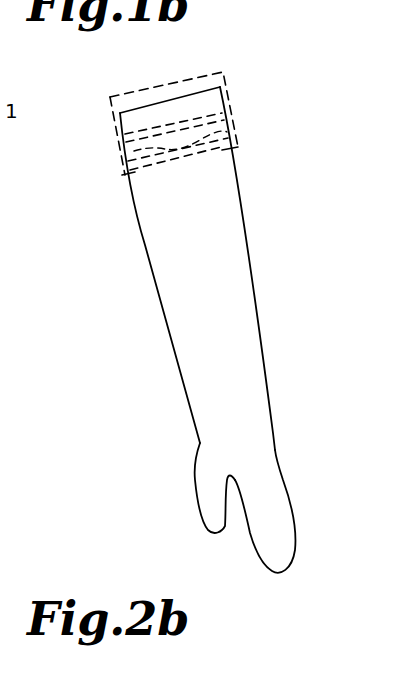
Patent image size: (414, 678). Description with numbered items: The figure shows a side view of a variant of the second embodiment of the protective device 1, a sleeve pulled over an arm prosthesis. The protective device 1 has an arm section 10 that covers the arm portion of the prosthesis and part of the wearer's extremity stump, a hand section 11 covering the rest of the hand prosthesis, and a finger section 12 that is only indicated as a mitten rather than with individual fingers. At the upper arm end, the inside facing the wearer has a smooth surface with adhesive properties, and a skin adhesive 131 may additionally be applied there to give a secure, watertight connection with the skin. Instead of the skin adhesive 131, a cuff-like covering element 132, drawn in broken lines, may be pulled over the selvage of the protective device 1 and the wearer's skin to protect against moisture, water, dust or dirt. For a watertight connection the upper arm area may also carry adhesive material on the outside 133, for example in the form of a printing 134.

The protective device 1 is at (100, 184).
The arm section 10 is at (152, 267).
The hand section 11 is at (188, 470).
The finger section 12 is at (206, 550).
The skin adhesive 131 is at (227, 117).
The cuff-like covering element 132 is at (223, 75).
The outside 133 is at (193, 101).
The printing 134 is at (233, 136).